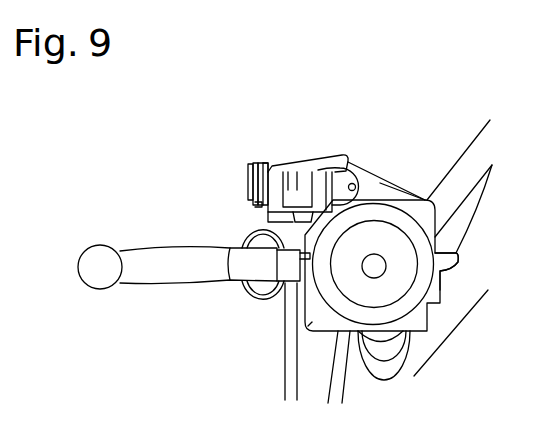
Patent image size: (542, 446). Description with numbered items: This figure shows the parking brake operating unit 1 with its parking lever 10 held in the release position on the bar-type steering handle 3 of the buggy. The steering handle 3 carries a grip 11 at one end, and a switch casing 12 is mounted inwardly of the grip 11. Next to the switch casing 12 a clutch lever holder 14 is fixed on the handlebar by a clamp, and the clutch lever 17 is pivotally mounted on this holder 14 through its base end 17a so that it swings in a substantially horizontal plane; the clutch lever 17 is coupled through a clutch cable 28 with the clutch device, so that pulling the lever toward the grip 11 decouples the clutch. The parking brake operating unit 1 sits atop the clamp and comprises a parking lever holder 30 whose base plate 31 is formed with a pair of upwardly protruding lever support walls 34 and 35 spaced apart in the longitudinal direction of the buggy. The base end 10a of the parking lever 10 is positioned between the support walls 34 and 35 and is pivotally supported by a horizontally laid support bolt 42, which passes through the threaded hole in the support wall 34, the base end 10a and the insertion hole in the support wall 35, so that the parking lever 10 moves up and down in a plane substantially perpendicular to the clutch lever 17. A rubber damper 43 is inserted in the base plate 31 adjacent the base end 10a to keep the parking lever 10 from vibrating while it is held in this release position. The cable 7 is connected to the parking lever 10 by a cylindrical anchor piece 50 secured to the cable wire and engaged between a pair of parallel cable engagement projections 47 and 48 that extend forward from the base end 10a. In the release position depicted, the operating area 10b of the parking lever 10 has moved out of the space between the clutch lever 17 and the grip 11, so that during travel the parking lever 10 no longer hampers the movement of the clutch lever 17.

The parking brake operating unit 1 is at (365, 149).
The bar-type steering handle 3 is at (458, 310).
The cable 7 is at (348, 383).
The parking lever 10 is at (314, 150).
The base end 10a is at (288, 172).
The operating area 10b is at (330, 170).
The grip 11 is at (385, 288).
The switch casing 12 is at (440, 277).
The clutch lever holder 14 is at (247, 288).
The clutch lever 17 is at (155, 252).
The base end 17a is at (297, 265).
The clutch cable 28 is at (292, 345).
The parking lever holder 30 is at (395, 187).
The base plate 31 is at (268, 222).
The lever support wall 34 is at (343, 162).
The lever support wall 35 is at (265, 164).
The support bolt 42 is at (382, 183).
The rubber damper 43 is at (297, 172).
The cable engagement projection 47 is at (266, 162).
The cable engagement projection 48 is at (246, 172).
The cylindrical anchor piece 50 is at (248, 185).